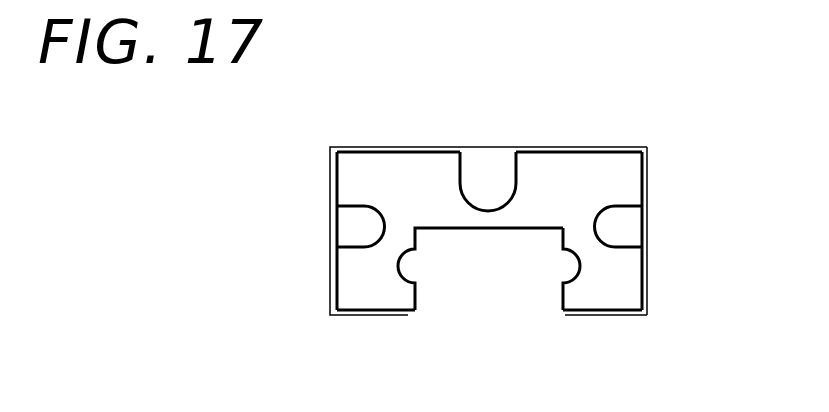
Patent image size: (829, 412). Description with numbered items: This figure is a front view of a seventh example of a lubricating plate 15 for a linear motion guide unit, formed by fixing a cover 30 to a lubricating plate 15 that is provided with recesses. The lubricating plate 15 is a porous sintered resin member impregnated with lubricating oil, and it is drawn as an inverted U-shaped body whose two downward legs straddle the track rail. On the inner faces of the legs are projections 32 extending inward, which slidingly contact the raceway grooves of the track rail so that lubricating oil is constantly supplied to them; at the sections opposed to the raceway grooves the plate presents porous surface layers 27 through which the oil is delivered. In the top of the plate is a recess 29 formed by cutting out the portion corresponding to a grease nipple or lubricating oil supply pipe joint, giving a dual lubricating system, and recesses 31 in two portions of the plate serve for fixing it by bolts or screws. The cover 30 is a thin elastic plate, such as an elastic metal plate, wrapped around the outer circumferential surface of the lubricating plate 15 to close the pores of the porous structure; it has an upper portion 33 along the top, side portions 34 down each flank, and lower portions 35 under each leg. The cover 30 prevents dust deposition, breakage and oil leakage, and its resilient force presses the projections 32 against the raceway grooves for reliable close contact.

The lubricating plate 15 is at (571, 149).
The porous surface layer 27 is at (548, 262).
The recess 29 is at (515, 178).
The cover 30 is at (647, 175).
The recess 31 is at (358, 243).
The projection 32 is at (422, 265).
The upper portion 33 is at (383, 148).
The side portion 34 is at (330, 178).
The lower portion 35 is at (367, 312).